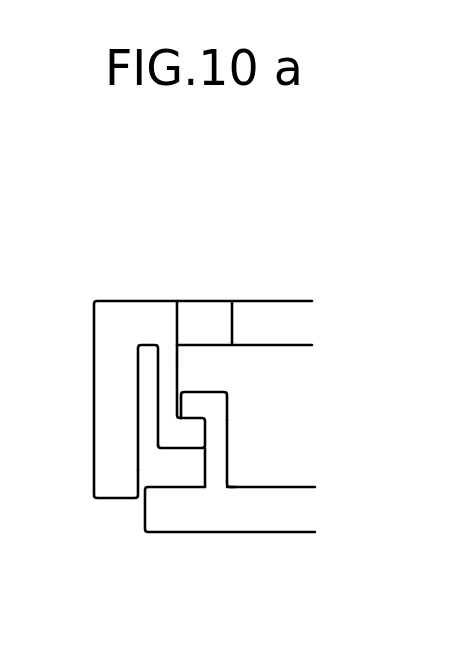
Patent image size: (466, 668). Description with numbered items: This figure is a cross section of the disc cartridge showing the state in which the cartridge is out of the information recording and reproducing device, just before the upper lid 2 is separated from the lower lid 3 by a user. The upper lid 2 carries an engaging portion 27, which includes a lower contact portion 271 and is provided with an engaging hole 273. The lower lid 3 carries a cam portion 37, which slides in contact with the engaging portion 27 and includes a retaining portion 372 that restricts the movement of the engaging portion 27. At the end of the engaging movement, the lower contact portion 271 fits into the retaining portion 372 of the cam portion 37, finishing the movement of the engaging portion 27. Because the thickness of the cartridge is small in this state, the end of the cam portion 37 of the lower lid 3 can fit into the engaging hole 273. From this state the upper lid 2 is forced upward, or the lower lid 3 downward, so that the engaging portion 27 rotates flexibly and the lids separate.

The upper lid 2 is at (113, 499).
The engaging portion 27 is at (165, 378).
The lower contact portion 271 is at (177, 432).
The engaging hole 273 is at (215, 312).
The lower lid 3 is at (263, 532).
The cam portion 37 is at (227, 435).
The retaining portion 372 is at (207, 418).